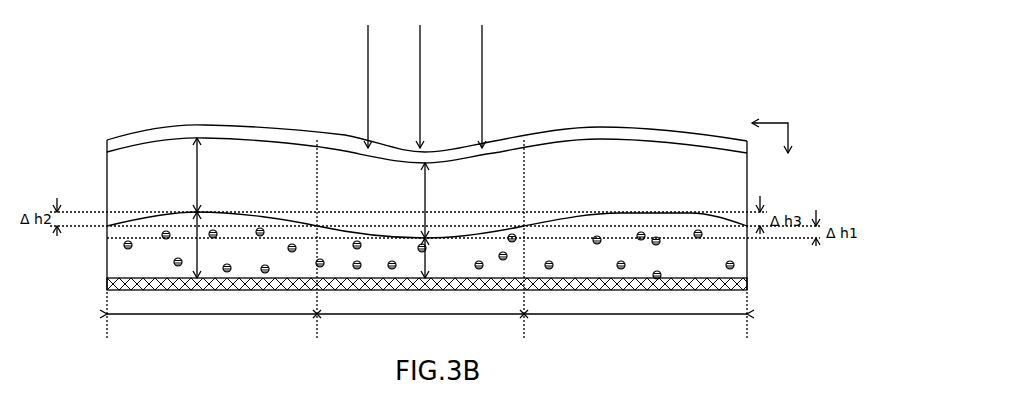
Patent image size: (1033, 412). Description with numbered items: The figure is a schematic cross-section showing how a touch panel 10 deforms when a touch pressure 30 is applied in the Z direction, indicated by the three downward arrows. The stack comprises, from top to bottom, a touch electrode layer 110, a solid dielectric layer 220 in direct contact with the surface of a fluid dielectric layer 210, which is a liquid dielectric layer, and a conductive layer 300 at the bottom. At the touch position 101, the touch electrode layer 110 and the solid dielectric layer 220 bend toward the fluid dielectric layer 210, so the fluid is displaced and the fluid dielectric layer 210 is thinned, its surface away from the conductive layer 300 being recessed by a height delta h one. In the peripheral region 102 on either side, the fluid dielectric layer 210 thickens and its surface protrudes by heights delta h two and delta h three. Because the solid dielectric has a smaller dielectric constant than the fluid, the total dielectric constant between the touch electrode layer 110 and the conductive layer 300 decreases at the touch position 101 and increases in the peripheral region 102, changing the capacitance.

The touch panel 10 is at (457, 186).
The touch electrode layer 110 is at (158, 137).
The solid dielectric layer 220 is at (145, 163).
The fluid dielectric layer 210 is at (147, 245).
The conductive layer 300 is at (143, 280).
The touch pressure 30 is at (366, 118).
The touch position 101 is at (420, 327).
The peripheral region of the touch position 102 is at (427, 325).